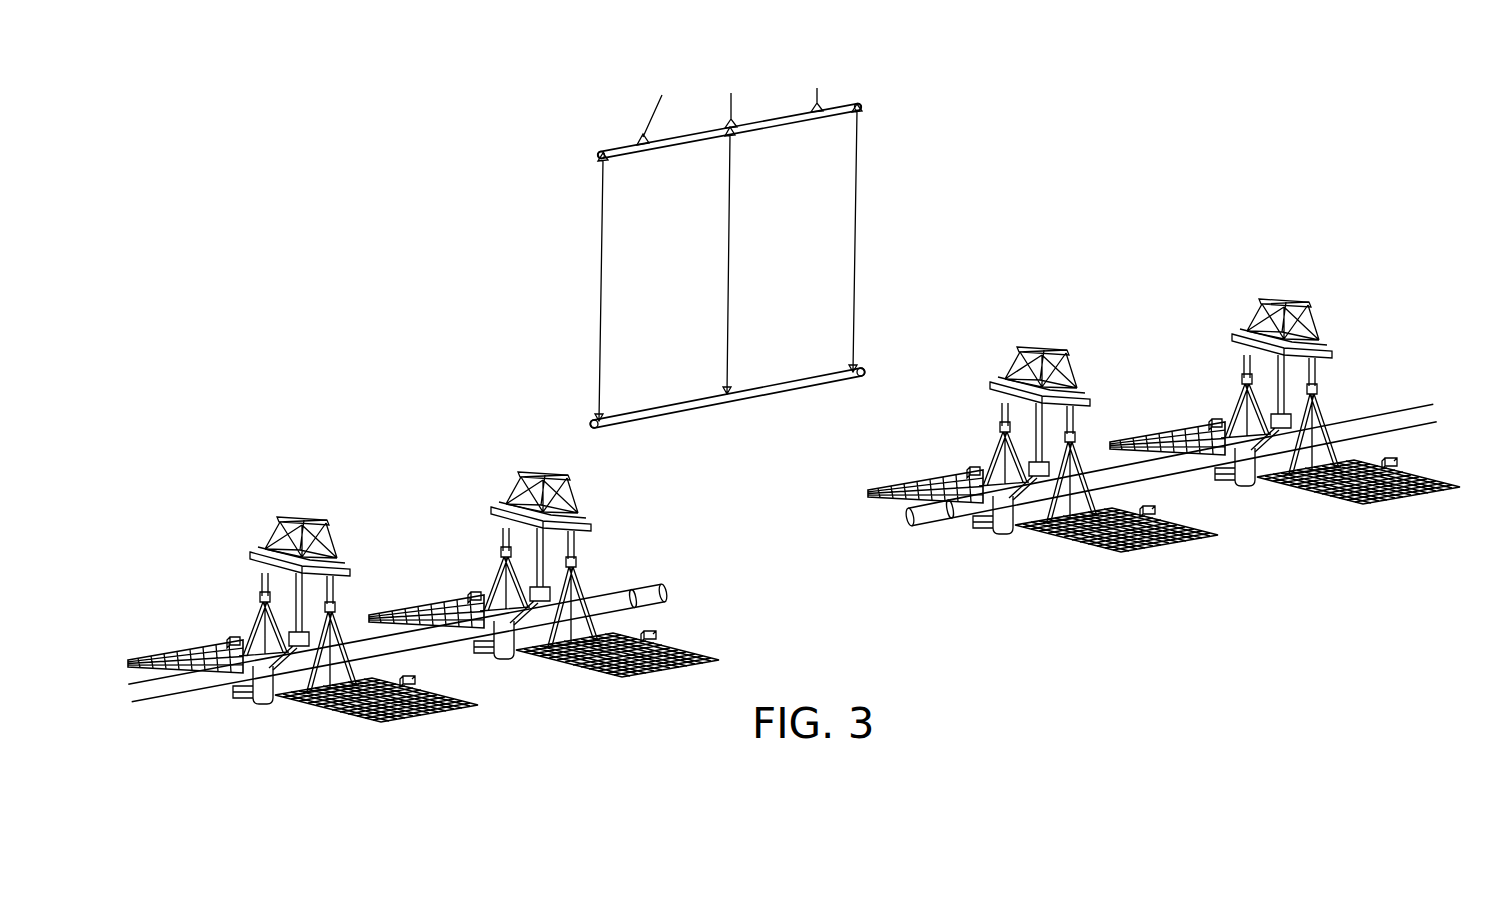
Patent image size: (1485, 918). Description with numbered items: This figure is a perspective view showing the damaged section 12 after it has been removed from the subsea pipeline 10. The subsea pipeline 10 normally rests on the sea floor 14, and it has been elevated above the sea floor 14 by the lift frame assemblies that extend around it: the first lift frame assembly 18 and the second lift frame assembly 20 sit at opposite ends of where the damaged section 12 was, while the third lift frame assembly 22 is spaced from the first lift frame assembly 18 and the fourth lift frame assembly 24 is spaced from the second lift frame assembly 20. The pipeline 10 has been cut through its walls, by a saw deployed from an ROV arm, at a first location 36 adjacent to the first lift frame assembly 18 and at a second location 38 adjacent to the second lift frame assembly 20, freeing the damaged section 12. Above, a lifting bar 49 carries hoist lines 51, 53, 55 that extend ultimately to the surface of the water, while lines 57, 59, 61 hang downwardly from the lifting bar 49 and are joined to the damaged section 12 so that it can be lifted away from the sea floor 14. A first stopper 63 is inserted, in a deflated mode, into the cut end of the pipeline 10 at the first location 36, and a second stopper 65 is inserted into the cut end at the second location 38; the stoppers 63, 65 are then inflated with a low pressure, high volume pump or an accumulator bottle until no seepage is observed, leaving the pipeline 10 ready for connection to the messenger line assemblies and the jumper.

The subsea pipeline 10 is at (432, 642).
The damaged section 12 is at (772, 394).
The sea floor 14 is at (303, 638).
The first lift frame assembly 18 is at (582, 666).
The second lift frame assembly 20 is at (1133, 549).
The third lift frame assembly 22 is at (433, 714).
The fourth lift frame assembly 24 is at (1372, 507).
The first location 36 is at (623, 592).
The second location 38 is at (950, 516).
The lifting bar 49 is at (673, 146).
The hoist line 51 is at (657, 107).
The hoist line 53 is at (733, 100).
The hoist line 55 is at (818, 88).
The line 57 is at (603, 267).
The line 59 is at (730, 247).
The line 61 is at (857, 225).
The first stopper 63 is at (653, 598).
The second stopper 65 is at (905, 514).